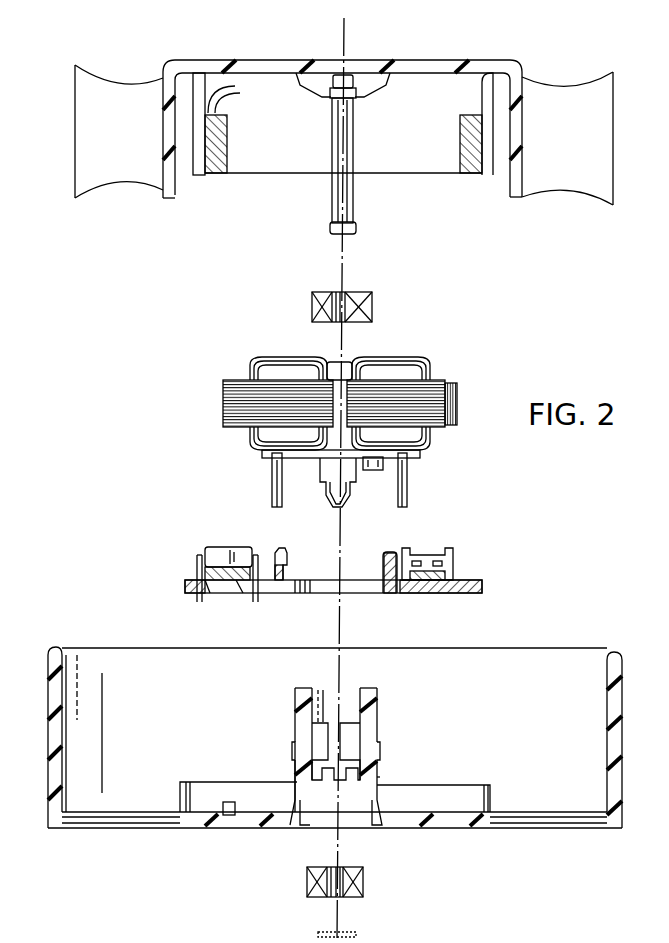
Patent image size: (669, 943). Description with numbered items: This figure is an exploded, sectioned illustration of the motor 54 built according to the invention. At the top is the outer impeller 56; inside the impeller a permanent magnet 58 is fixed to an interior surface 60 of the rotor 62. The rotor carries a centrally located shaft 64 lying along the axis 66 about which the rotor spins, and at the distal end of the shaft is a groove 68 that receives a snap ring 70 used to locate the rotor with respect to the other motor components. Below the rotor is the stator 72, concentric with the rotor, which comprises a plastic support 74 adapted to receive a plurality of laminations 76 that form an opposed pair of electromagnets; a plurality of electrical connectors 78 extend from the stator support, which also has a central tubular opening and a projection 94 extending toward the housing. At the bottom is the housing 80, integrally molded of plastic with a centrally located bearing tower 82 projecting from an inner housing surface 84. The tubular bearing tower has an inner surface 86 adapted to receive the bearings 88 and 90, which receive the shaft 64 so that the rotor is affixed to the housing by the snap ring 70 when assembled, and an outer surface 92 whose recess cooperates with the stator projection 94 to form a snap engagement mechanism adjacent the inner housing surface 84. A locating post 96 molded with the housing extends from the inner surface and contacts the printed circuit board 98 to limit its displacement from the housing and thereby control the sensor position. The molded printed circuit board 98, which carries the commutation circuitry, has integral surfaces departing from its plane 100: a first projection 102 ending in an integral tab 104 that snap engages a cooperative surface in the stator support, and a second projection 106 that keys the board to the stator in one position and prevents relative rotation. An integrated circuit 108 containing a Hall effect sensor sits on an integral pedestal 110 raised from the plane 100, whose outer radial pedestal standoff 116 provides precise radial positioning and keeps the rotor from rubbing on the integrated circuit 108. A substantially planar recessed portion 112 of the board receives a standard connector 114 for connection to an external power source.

The motor 54 is at (646, 90).
The outer impeller 56 is at (97, 138).
The permanent magnet 58 is at (228, 118).
The interior surface 60 is at (407, 117).
The rotor 62 is at (262, 60).
The shaft 64 is at (357, 127).
The axis 66 is at (352, 40).
The groove 68 is at (356, 226).
The snap ring 70 is at (322, 933).
The stator 72 is at (253, 351).
The plastic support 74 is at (423, 362).
The laminations 76 is at (458, 382).
The electrical connectors 78 is at (272, 495).
The housing 80 is at (47, 812).
The bearing tower 82 is at (288, 722).
The inner housing surface 84 is at (522, 810).
The inner surface 86 is at (313, 697).
The bearing 88 is at (363, 882).
The bearing 90 is at (373, 300).
The outer surface 92 is at (376, 708).
The projection 94 is at (373, 470).
The locating post 96 is at (228, 815).
The printed circuit board 98 is at (182, 591).
The plane 100 is at (195, 577).
The first projection 102 is at (275, 555).
The integral tab 104 is at (287, 552).
The second projection 106 is at (383, 563).
The integrated circuit 108 is at (222, 555).
The integral pedestal 110 is at (240, 594).
The recessed portion 112 is at (482, 593).
The connector 114 is at (423, 548).
The pedestal standoff 116 is at (208, 593).